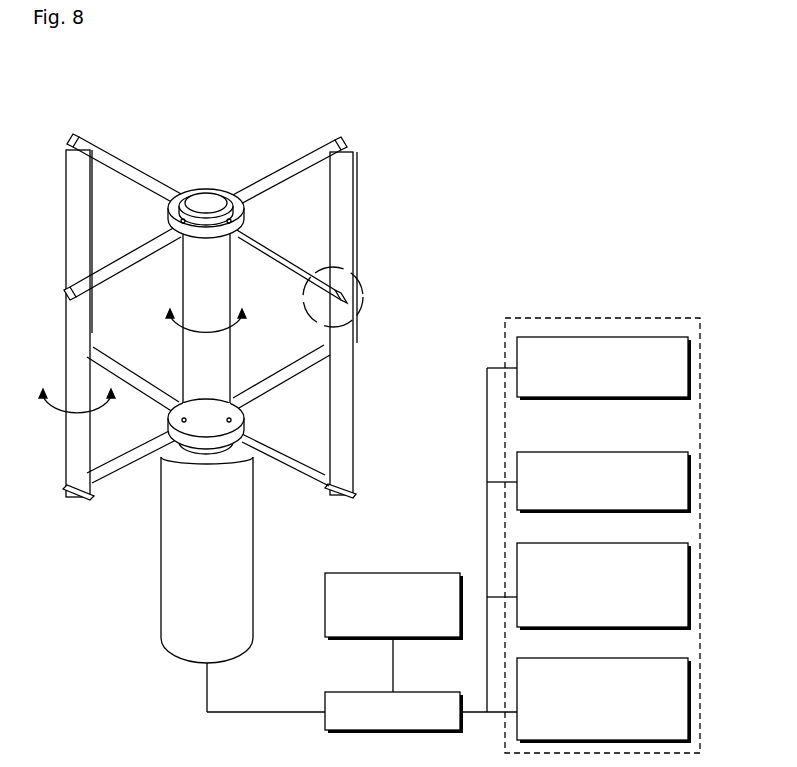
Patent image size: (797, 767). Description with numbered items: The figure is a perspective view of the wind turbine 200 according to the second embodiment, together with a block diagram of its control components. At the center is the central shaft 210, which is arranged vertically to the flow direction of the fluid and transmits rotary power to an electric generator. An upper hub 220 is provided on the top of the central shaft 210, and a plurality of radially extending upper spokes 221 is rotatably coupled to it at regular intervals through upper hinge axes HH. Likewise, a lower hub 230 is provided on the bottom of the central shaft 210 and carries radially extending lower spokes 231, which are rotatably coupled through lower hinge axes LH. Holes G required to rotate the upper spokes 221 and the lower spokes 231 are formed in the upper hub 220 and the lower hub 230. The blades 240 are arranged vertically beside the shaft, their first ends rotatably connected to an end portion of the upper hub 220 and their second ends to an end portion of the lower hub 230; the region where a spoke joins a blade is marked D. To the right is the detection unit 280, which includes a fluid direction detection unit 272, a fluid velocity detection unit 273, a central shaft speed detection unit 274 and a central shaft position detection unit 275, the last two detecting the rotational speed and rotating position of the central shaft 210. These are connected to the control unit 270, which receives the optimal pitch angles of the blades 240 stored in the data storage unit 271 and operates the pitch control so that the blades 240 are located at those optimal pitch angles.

The wind turbine 200 is at (405, 110).
The central shaft 210 is at (175, 392).
The upper hub 220 is at (252, 211).
The upper spokes 221 is at (268, 182).
The lower hub 230 is at (252, 397).
The lower spokes 231 is at (299, 477).
The blades 240 is at (354, 236).
The control unit 270 is at (325, 694).
The data storage unit 271 is at (325, 576).
The fluid direction detection unit 272 is at (690, 368).
The fluid velocity detection unit 273 is at (690, 482).
The central shaft speed detection unit 274 is at (690, 597).
The central shaft position detection unit 275 is at (690, 712).
The detection unit 280 is at (605, 318).
The upper hinge axes HH is at (172, 206).
The lower hinge axes LH is at (246, 414).
The holes G is at (148, 249).
The blade-arm joint detail D is at (365, 297).